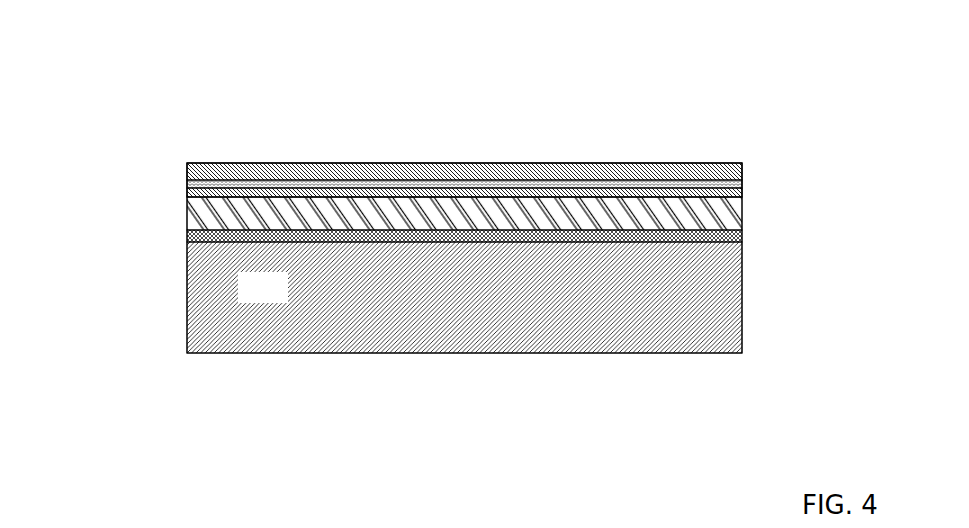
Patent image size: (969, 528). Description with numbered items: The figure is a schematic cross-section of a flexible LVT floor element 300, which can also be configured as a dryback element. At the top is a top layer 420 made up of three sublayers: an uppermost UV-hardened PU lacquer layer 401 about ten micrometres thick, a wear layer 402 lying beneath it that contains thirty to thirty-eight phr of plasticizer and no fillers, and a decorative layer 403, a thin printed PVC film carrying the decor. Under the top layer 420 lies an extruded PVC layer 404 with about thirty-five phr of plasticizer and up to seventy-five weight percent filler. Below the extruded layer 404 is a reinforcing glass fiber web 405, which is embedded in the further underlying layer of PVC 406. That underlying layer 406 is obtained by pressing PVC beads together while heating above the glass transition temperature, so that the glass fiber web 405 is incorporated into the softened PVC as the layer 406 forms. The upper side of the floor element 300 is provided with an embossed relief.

The floor element 300 is at (140, 109).
The PU lacquer layer 401 is at (743, 177).
The wear layer 402 is at (743, 184).
The decorative layer 403 is at (743, 190).
The extruded PVC layer 404 is at (187, 211).
The glass fiber web 405 is at (187, 239).
The underlying layer of PVC 406 is at (286, 299).
The top layer 420 is at (823, 167).